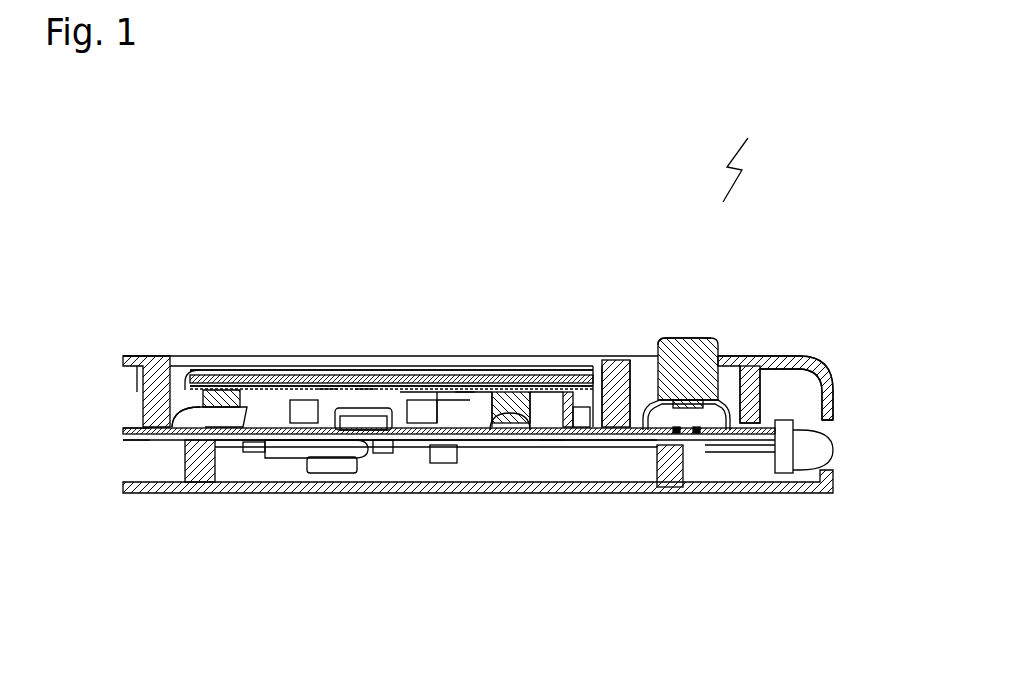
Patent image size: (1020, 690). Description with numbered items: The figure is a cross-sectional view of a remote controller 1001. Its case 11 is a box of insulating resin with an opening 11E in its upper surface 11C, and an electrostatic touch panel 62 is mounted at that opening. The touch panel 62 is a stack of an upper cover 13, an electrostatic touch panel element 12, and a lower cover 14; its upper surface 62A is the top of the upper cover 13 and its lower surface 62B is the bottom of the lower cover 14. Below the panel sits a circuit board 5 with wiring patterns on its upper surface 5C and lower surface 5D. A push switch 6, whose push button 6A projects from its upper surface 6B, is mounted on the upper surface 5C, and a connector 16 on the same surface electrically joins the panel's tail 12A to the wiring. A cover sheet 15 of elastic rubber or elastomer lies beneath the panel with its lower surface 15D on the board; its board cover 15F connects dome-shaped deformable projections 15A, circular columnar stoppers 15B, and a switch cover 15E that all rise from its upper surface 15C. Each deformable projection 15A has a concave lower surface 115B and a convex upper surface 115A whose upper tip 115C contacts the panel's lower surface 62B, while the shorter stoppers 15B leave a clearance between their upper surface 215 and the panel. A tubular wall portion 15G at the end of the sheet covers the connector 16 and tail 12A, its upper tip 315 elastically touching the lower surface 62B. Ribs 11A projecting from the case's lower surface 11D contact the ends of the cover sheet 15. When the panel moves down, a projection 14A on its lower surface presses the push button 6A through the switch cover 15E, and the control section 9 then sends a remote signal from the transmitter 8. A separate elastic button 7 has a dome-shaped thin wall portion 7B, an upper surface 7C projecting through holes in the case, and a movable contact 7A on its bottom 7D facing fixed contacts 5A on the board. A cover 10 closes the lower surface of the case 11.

The remote controller 1001 is at (753, 155).
The case 11 is at (800, 356).
The ribs 11A is at (155, 400).
The upper surface 11C is at (130, 356).
The lower surface 11D is at (137, 372).
The opening 11E is at (197, 366).
The electrostatic touch panel 62 is at (282, 250).
The upper cover 13 is at (213, 369).
The electrostatic touch panel element 12 is at (250, 375).
The lower cover 14 is at (293, 382).
The upper surface 62A is at (597, 395).
The tail 12A is at (612, 395).
The upper tip 315 is at (622, 395).
The lower surface 62B is at (553, 441).
The cover sheet 15 is at (468, 450).
The upper tip 115C is at (512, 394).
The convex upper surface 115A is at (463, 390).
The concave lower surface 115B is at (200, 447).
The push switch 6 is at (356, 431).
The upper surface 6B is at (374, 410).
The push button 6A is at (378, 447).
The control section 9 is at (328, 469).
The board cover 15F is at (262, 453).
The lower surface 15D is at (445, 463).
The stoppers 15B is at (413, 392).
The upper surface 215 is at (428, 400).
The deformable projections 15A is at (497, 393).
The tubular wall portion 15G is at (555, 393).
The connector 16 is at (582, 441).
The switch cover 15E is at (365, 392).
The upper surface 15C is at (327, 392).
The projection 14A is at (350, 386).
The circuit board 5 is at (527, 441).
The upper surface 5C is at (137, 428).
The lower surface 5D is at (137, 440).
The fixed contacts 5A is at (698, 434).
The cover 10 is at (630, 488).
The button 7 is at (672, 362).
The upper surface 7C is at (680, 345).
The movable contact 7A is at (700, 400).
The thin wall portion 7B is at (758, 362).
The bottom 7D is at (725, 447).
The transmitter 8 is at (812, 455).